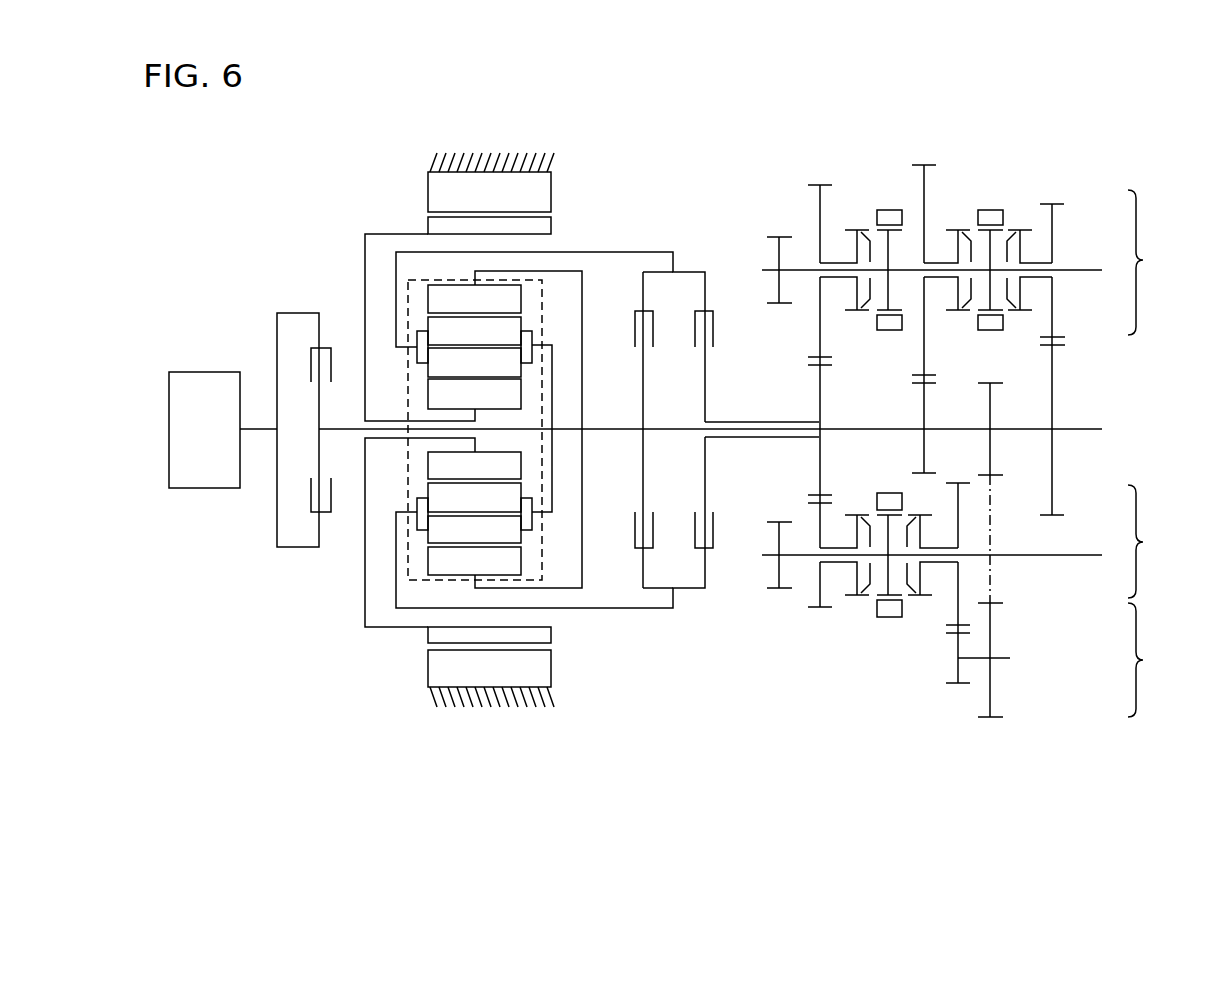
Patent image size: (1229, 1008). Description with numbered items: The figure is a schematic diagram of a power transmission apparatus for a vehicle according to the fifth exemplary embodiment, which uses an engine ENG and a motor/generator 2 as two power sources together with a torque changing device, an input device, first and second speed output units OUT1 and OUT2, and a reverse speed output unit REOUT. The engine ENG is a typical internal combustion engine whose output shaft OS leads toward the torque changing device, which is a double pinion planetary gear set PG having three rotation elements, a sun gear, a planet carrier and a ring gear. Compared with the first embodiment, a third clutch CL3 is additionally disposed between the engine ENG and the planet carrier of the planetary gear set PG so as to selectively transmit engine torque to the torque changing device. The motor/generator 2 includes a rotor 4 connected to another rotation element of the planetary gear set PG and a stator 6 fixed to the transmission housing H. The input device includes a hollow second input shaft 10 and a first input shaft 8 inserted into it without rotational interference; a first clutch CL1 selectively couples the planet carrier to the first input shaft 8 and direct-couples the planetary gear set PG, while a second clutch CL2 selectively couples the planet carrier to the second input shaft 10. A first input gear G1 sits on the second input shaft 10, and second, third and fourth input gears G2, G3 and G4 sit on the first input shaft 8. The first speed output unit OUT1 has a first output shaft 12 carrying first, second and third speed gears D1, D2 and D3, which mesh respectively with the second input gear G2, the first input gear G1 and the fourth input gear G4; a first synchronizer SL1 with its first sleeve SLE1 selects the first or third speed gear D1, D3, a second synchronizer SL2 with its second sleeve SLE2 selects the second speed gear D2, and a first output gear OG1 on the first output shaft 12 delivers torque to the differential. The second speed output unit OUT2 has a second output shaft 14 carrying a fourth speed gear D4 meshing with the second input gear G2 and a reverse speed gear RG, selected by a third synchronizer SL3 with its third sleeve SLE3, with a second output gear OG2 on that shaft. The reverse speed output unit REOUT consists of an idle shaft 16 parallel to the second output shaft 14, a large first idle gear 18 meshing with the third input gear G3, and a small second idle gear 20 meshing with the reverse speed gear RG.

The engine ENG is at (204, 430).
The output shaft OS is at (257, 427).
The third clutch CL3 is at (304, 430).
The planetary gear set PG is at (404, 290).
The motor/generator 2 is at (529, 429).
The rotor 4 is at (514, 429).
The stator 6 is at (552, 190).
The transmission housing H is at (523, 157).
The first clutch CL1 is at (635, 430).
The second clutch CL2 is at (724, 429).
The second input shaft 10 is at (763, 420).
The first input shaft 8 is at (728, 438).
The first output shaft 12 is at (1082, 275).
The second output shaft 14 is at (1090, 552).
The first output gear OG1 is at (778, 259).
The second output gear OG2 is at (772, 568).
The first speed gear D1 is at (925, 207).
The second speed gear D2 is at (818, 216).
The third speed gear D3 is at (1055, 240).
The fourth speed gear D4 is at (818, 590).
The first input gear G1 is at (822, 408).
The second input gear G2 is at (927, 413).
The third input gear G3 is at (993, 413).
The fourth input gear G4 is at (1054, 379).
The first synchronizer SL1 is at (1008, 220).
The second synchronizer SL2 is at (855, 215).
The third synchronizer SL3 is at (889, 633).
The first sleeve SLE1 is at (1001, 200).
The second sleeve SLE2 is at (888, 200).
The third sleeve SLE3 is at (886, 628).
The reverse speed gear RG is at (957, 600).
The idle shaft 16 is at (1004, 657).
The first idle gear 18 is at (995, 693).
The second idle gear 20 is at (958, 673).
The first speed output unit OUT1 is at (1164, 262).
The second speed output unit OUT2 is at (1165, 541).
The reverse speed output unit REOUT is at (1170, 660).